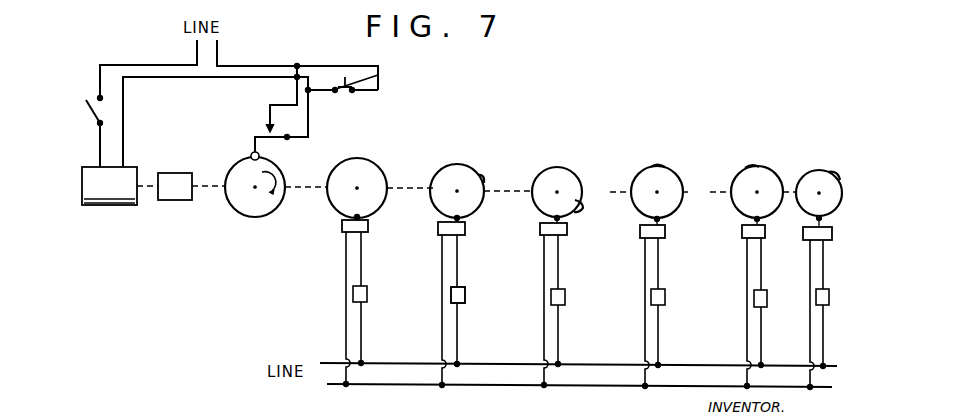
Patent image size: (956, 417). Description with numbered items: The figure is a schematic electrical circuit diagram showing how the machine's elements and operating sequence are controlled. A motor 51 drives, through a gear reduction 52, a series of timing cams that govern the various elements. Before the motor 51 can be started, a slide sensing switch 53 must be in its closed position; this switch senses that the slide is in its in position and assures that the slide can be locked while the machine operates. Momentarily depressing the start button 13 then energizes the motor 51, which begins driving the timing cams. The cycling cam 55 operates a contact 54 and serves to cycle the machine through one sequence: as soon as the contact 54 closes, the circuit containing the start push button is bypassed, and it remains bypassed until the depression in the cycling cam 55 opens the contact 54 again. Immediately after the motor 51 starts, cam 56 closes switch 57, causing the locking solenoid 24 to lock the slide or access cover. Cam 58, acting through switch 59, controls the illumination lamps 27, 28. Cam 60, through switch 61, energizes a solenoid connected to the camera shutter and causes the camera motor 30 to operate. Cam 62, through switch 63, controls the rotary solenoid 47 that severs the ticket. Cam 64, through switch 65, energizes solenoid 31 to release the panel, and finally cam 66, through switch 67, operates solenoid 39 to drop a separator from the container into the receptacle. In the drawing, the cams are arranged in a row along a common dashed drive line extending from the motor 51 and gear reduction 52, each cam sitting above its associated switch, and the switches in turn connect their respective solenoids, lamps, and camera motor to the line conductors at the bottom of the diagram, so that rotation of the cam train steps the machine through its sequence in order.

The start button 13 is at (378, 75).
The locking solenoid 24 is at (364, 292).
The illumination lamp 27 is at (465, 290).
The illumination lamp 28 is at (465, 294).
The camera motor 30 is at (565, 295).
The solenoid 31 is at (663, 294).
The solenoid 39 is at (756, 298).
The rotary solenoid 47 is at (816, 297).
The motor 51 is at (118, 193).
The gear reduction 52 is at (181, 200).
The slide sensing switch 53 is at (90, 113).
The contact 54 is at (266, 128).
The cycling cam 55 is at (274, 199).
The cam 56 is at (368, 202).
The switch 57 is at (363, 231).
The cam 58 is at (467, 203).
The switch 59 is at (460, 235).
The cam 60 is at (582, 192).
The switch 61 is at (566, 230).
The cam 62 is at (807, 205).
The switch 63 is at (806, 236).
The cam 64 is at (669, 203).
The switch 65 is at (665, 233).
The cam 66 is at (742, 186).
The switch 67 is at (742, 230).